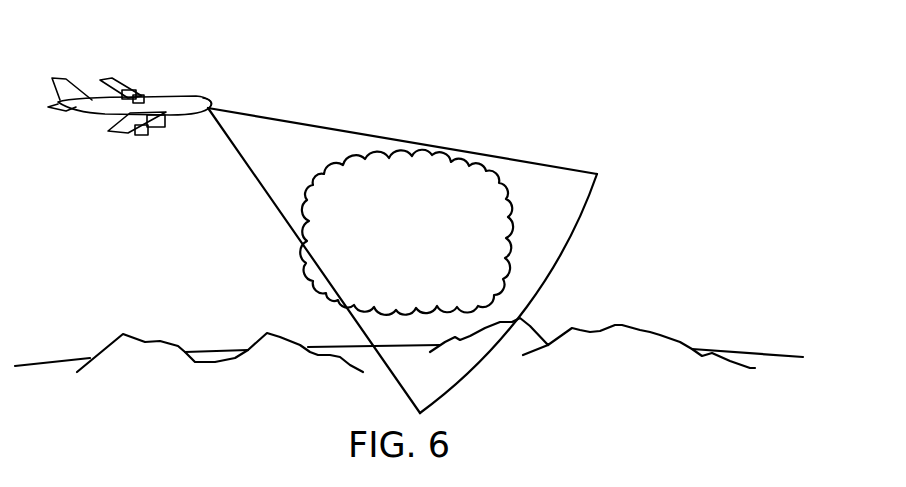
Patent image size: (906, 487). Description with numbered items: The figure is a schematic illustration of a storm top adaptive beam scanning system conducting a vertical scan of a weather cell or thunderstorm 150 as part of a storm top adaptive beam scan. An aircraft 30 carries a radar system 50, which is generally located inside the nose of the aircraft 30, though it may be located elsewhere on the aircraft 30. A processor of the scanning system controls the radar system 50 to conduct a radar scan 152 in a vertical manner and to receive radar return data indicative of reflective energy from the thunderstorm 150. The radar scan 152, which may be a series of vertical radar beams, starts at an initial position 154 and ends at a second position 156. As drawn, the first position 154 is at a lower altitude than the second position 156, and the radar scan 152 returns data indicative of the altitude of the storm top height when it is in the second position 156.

The aircraft 30 is at (142, 66).
The radar system 50 is at (207, 104).
The weather cell or thunderstorm 150 is at (344, 160).
The radar scan 152 is at (400, 233).
The initial position 154 is at (256, 181).
The second position 156 is at (280, 119).